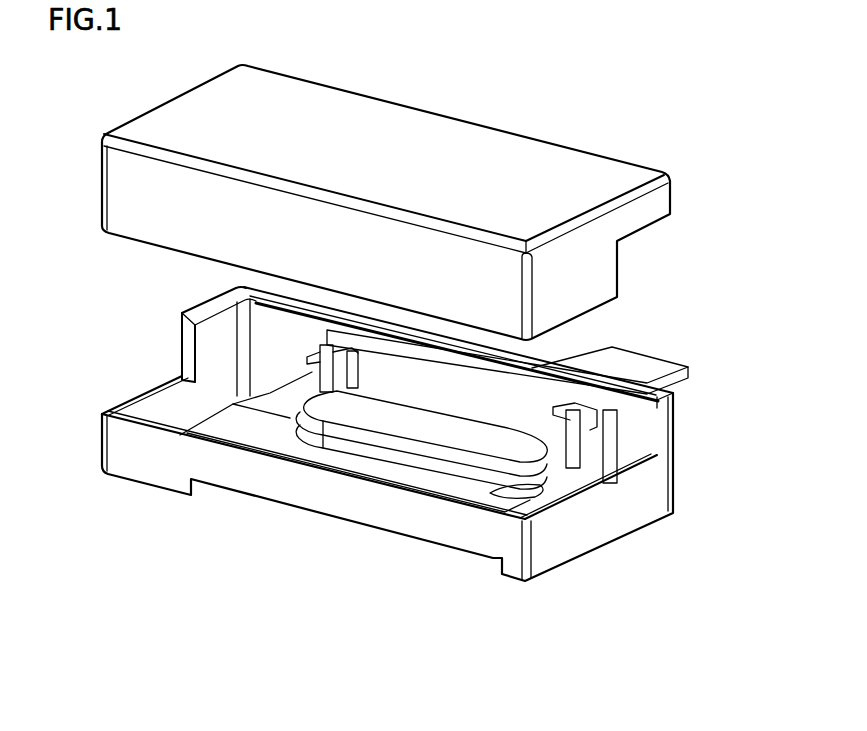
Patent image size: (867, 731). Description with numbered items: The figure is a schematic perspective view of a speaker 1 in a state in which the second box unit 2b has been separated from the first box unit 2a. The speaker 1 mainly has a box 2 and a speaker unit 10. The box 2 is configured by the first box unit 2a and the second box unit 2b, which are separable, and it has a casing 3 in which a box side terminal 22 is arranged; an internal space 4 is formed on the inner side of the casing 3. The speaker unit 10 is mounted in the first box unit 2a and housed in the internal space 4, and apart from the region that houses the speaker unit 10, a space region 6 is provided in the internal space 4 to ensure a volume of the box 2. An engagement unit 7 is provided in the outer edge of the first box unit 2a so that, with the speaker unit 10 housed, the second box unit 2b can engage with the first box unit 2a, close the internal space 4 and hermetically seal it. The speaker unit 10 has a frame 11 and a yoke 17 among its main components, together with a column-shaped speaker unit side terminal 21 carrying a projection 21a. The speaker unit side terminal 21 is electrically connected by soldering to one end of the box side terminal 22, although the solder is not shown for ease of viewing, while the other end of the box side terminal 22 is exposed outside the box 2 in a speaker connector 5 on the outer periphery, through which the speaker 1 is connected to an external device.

The speaker 1 is at (694, 110).
The box 2 is at (557, 547).
The first box unit 2a is at (647, 487).
The second box unit 2b is at (582, 279).
The casing 3 is at (437, 384).
The internal space 4 is at (247, 425).
The speaker connector 5 is at (638, 363).
The space region 6 is at (228, 413).
The engagement unit 7 is at (210, 313).
The speaker unit 10 is at (517, 490).
The frame 11 is at (357, 462).
The yoke 17 is at (440, 423).
The speaker unit side terminal 21 is at (590, 460).
The projection 21a is at (598, 427).
The box side terminal 22 is at (660, 394).